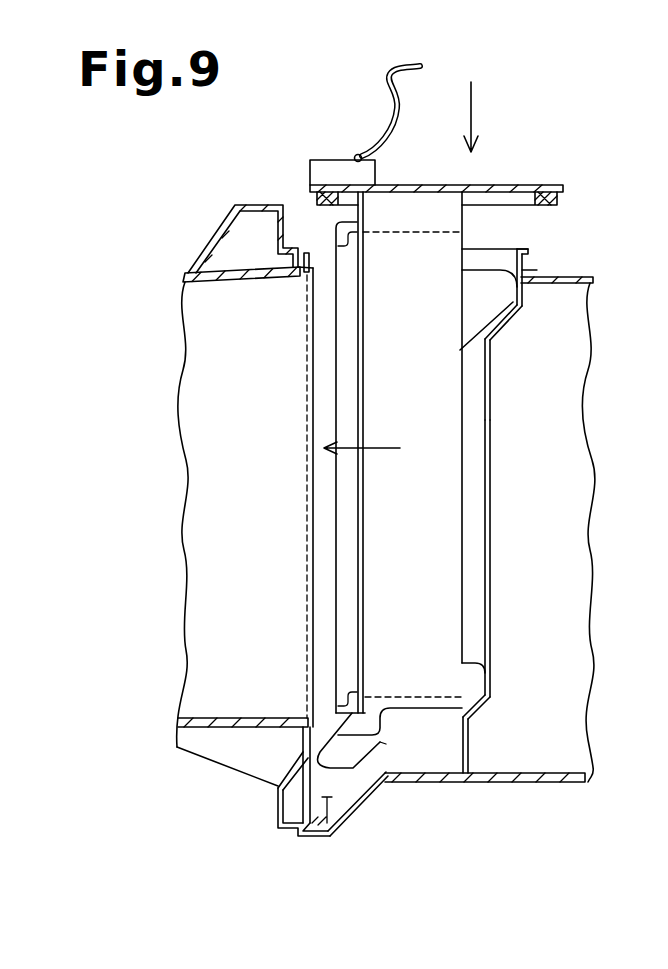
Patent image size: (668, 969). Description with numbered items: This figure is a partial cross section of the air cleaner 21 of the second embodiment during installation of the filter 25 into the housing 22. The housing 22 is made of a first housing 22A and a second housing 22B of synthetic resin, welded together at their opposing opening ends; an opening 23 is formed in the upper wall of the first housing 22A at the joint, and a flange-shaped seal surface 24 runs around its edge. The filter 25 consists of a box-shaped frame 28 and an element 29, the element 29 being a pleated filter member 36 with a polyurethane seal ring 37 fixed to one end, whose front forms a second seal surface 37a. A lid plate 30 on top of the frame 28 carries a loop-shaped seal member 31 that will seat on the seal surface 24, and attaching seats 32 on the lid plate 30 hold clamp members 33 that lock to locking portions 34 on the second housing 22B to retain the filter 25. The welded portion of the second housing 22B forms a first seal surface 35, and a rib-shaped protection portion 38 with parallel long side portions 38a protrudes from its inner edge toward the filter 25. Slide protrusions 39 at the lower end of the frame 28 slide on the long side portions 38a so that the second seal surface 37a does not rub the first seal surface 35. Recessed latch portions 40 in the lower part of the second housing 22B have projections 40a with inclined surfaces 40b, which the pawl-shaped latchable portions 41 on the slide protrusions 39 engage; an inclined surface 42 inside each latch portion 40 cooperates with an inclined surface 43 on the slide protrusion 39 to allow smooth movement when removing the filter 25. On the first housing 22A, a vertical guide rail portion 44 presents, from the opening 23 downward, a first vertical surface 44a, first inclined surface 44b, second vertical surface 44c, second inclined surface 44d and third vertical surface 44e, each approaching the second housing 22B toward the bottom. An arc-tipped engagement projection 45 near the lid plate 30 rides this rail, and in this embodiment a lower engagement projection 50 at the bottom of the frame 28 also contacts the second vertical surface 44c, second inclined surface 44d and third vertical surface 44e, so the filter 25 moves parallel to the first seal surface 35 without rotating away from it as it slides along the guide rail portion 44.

The air cleaner 21 is at (601, 406).
The housing 22 is at (593, 476).
The first housing 22A is at (546, 783).
The second housing 22B is at (185, 748).
The opening 23 is at (520, 254).
The seal surface 24 is at (538, 249).
The filter 25 is at (322, 335).
The frame 28 is at (492, 438).
The element 29 is at (336, 383).
The lid plate 30 is at (503, 186).
The seal member 31 is at (558, 197).
The attaching seat 32 is at (376, 172).
The clamp member 33 is at (397, 114).
The locking portion 34 is at (243, 204).
The first seal surface 35 is at (311, 262).
The filter member 36 is at (430, 233).
The seal ring 37 is at (336, 427).
The second seal surface 37a is at (344, 481).
The protection portion 38 is at (315, 270).
The long side portion 38a is at (314, 518).
The slide protrusion 39 is at (318, 751).
The latch portion 40 is at (282, 818).
The projection 40a is at (328, 830).
The inclined surface 40b is at (360, 802).
The latchable portion 41 is at (340, 762).
The inclined surface 42 is at (284, 788).
The inclined surface 43 is at (338, 728).
The guide rail portion 44 is at (490, 480).
The first vertical surface 44a is at (537, 270).
The first inclined surface 44b is at (501, 330).
The second vertical surface 44c is at (490, 402).
The second inclined surface 44d is at (488, 701).
The third vertical surface 44e is at (468, 756).
The engagement projection 45 is at (519, 290).
The engagement projection 50 is at (480, 664).